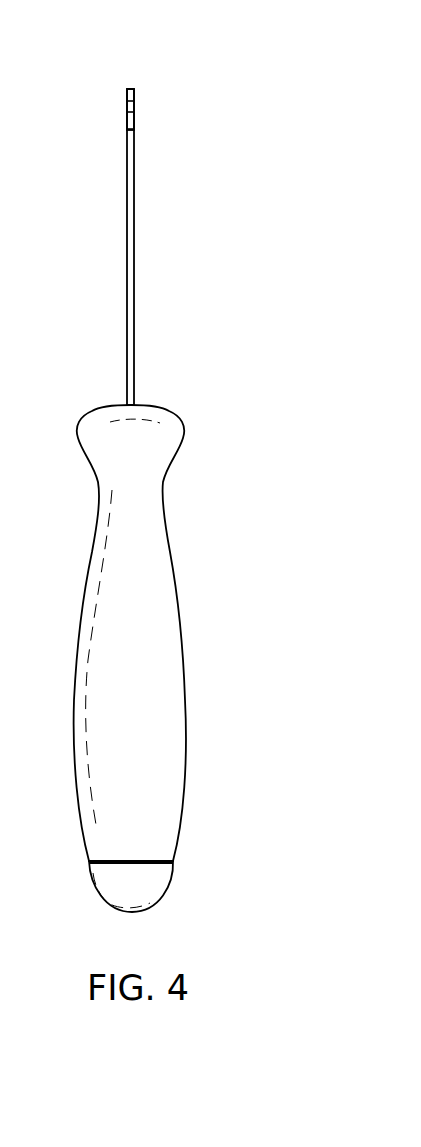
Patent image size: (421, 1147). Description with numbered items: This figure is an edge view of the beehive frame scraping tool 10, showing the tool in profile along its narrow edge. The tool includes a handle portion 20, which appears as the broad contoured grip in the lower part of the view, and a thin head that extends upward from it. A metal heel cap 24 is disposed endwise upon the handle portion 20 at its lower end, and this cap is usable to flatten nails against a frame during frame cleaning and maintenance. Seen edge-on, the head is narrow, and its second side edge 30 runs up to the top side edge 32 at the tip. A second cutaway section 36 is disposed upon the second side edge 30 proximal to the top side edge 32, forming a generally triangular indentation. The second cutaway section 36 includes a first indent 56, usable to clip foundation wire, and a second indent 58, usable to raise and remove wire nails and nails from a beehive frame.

The beehive frame scraping tool 10 is at (213, 122).
The handle portion 20 is at (173, 710).
The metal heel cap 24 is at (153, 879).
The second side edge 30 is at (132, 180).
The top side edge 32 is at (131, 88).
The second cutaway section 36 is at (143, 114).
The first indent 56 is at (127, 107).
The second indent 58 is at (127, 115).